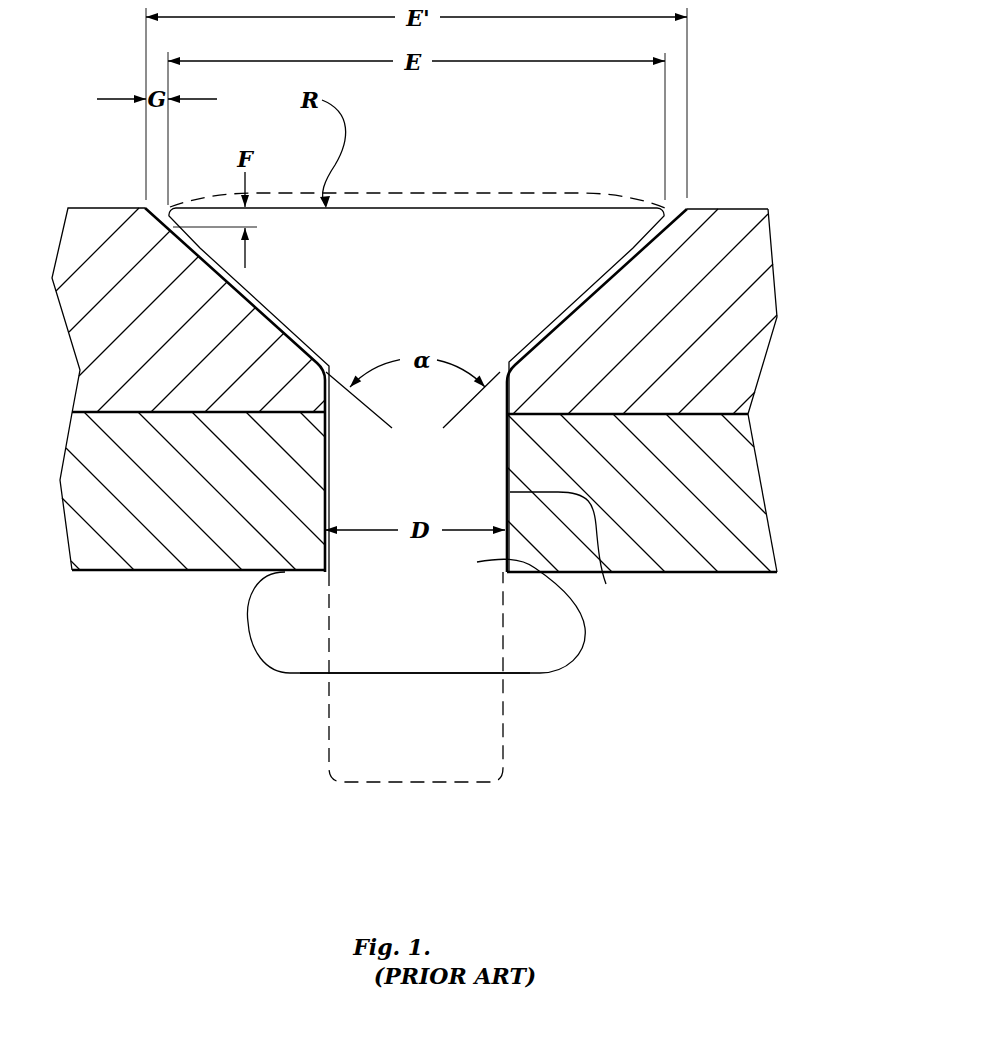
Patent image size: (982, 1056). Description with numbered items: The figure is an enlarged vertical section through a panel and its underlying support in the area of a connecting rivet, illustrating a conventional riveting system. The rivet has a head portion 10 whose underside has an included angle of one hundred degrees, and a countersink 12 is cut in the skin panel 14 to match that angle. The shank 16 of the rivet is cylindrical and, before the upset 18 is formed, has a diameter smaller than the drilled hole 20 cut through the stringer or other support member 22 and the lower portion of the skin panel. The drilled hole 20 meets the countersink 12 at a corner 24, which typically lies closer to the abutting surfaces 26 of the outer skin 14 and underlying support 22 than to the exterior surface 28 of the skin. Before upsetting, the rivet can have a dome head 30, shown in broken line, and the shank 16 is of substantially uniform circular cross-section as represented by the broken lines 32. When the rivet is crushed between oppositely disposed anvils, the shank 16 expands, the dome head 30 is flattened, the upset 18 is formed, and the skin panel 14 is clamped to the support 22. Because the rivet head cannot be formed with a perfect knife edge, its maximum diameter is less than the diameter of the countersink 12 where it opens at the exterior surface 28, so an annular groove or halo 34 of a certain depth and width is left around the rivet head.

The head portion 10 is at (430, 430).
The countersink 12 is at (585, 293).
The skin panel 14 is at (450, 350).
The shank 16 is at (585, 628).
The upset 18 is at (568, 663).
The drilled hole 20 is at (606, 584).
The support member 22 is at (752, 525).
The corner 24 is at (510, 373).
The abutting surfaces 26 is at (698, 414).
The exterior surface 28 is at (750, 208).
The dome head 30 is at (488, 193).
The broken lines 32 is at (328, 716).
The annular groove or halo 34 is at (675, 208).